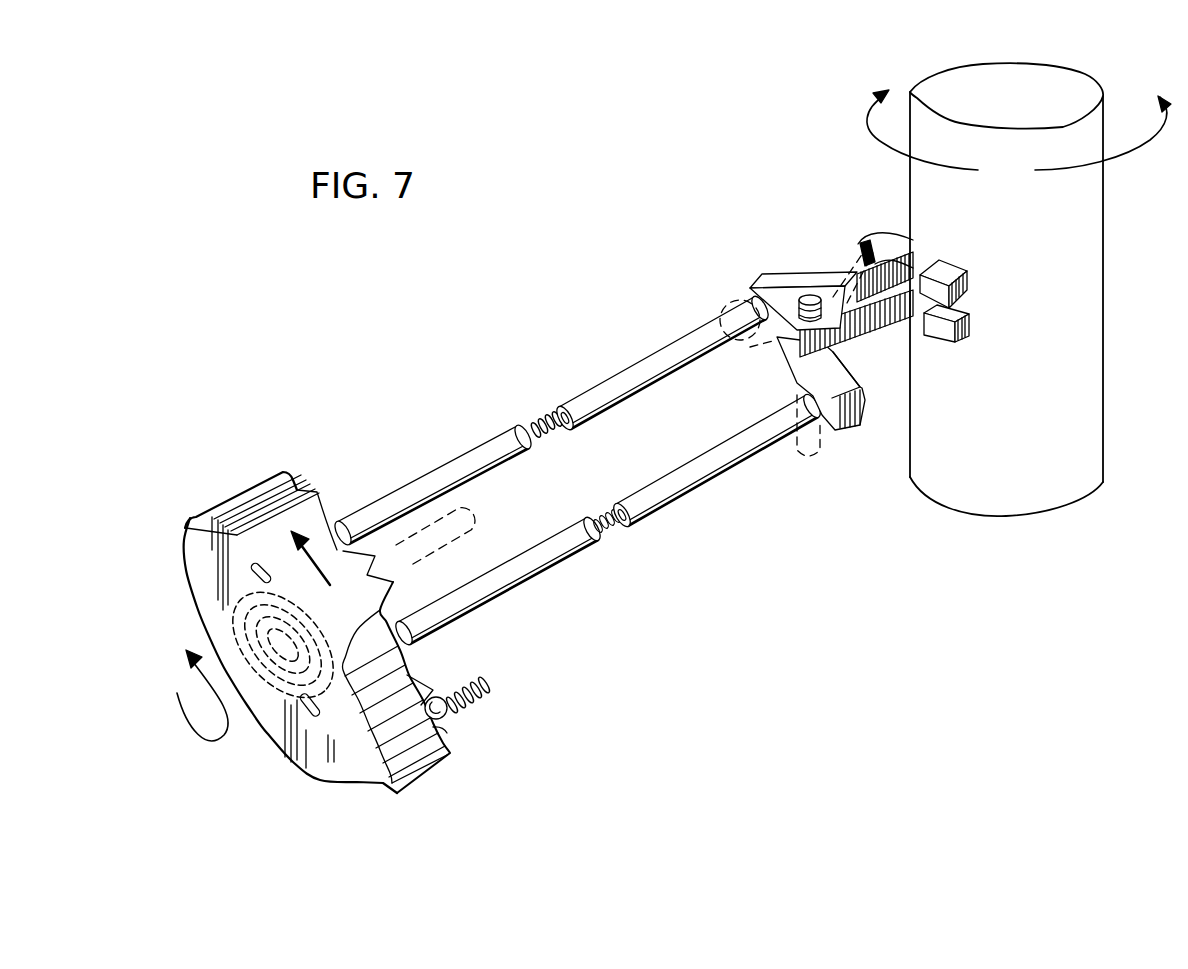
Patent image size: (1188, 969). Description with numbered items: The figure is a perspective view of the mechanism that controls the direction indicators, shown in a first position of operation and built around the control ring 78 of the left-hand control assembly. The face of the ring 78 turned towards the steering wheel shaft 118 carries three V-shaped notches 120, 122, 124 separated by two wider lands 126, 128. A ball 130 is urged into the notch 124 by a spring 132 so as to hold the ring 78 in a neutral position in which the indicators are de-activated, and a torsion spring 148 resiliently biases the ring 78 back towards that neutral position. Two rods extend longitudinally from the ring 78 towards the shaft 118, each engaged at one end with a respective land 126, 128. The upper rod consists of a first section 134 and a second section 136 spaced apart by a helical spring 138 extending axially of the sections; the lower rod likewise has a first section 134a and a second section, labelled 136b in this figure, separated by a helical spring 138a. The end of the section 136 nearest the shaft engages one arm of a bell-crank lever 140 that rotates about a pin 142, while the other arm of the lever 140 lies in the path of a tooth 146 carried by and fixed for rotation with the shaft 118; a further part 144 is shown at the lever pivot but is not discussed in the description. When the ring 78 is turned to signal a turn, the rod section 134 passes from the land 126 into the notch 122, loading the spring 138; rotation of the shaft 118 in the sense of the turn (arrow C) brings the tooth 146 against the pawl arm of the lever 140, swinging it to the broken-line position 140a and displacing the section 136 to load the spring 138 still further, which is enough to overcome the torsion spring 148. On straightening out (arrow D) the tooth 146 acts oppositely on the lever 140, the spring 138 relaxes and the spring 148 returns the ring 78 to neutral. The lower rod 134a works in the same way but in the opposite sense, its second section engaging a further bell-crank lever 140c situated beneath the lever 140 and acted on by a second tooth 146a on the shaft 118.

The control ring 78 is at (237, 505).
The steering wheel shaft 118 is at (1085, 224).
The V-shaped notch 120 is at (307, 470).
The V-shaped notch 122 is at (372, 574).
The V-shaped notch 124 is at (380, 783).
The land 126 is at (325, 512).
The land 128 is at (405, 658).
The ball 130 is at (451, 720).
The spring 132 is at (483, 703).
The rod section 134 is at (490, 450).
The rod section 134a is at (540, 553).
The rod section 136 is at (618, 377).
The lower extension rod 136b is at (680, 480).
The helical spring 138 is at (537, 423).
The helical spring 138a is at (613, 517).
The bell-crank lever 140 is at (767, 277).
The bore 140a is at (758, 340).
The bell-crank lever 140c is at (853, 413).
The pin 142 is at (800, 293).
The screw 144 is at (822, 292).
The tooth 146 is at (939, 275).
The tooth 146a is at (975, 322).
The torsion spring 148 is at (242, 610).